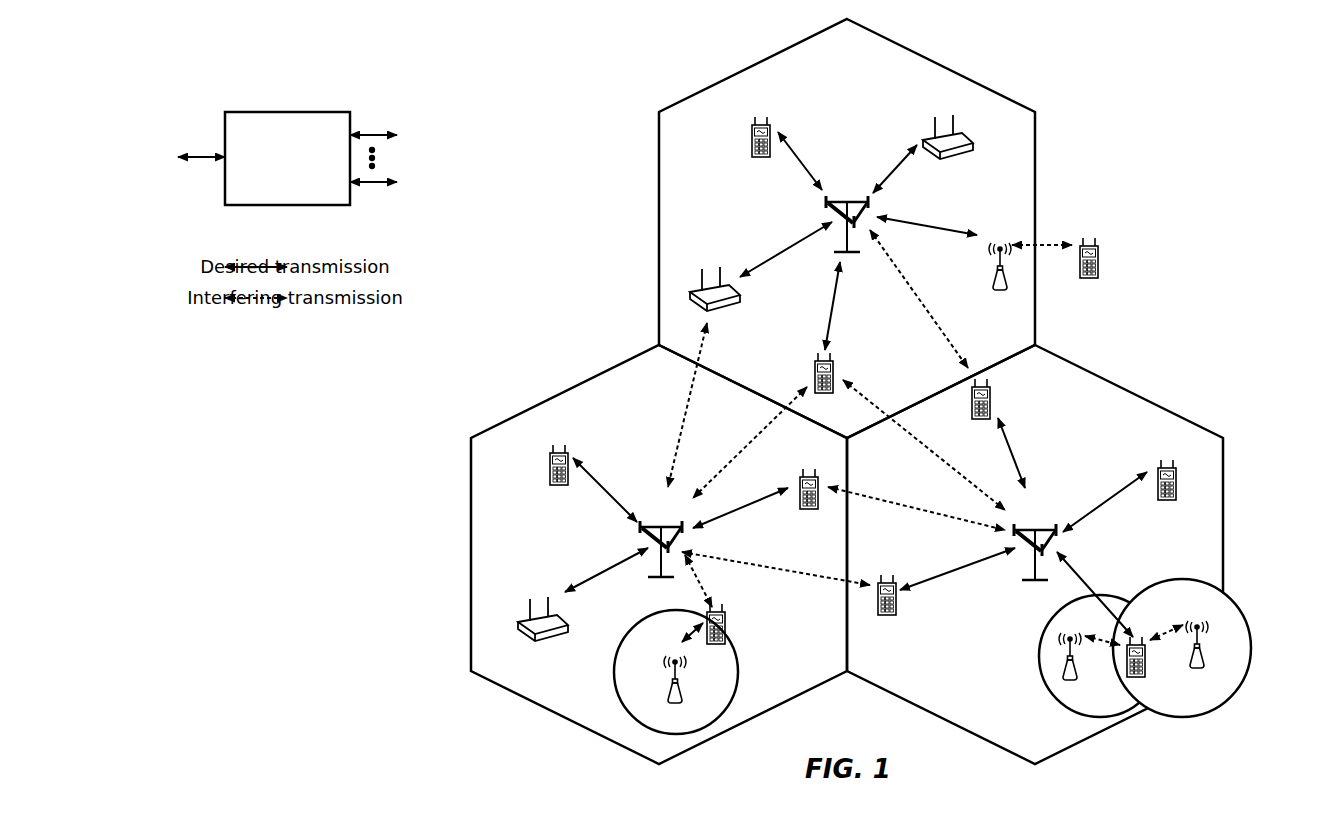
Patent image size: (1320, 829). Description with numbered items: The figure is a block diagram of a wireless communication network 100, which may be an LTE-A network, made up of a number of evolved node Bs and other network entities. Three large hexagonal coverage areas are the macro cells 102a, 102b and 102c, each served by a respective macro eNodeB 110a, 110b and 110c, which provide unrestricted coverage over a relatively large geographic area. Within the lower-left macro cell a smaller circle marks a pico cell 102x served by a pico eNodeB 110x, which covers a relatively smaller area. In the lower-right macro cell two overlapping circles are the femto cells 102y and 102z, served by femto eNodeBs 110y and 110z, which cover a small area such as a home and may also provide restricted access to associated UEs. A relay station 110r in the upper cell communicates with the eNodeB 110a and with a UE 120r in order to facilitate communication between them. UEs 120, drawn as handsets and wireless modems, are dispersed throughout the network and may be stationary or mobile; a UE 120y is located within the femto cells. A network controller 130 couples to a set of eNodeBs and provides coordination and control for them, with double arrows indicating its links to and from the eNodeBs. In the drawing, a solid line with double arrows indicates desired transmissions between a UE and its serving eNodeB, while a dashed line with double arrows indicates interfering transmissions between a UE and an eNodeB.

The wireless communication network 100 is at (1165, 76).
The macro cell 102a is at (940, 62).
The macro cell 102b is at (567, 390).
The macro cell 102c is at (1130, 392).
The pico cell 102x is at (684, 664).
The femto cell 102y is at (1042, 632).
The femto cell 102z is at (1176, 578).
The macro eNodeB 110a is at (844, 201).
The macro eNodeB 110b is at (655, 526).
The macro eNodeB 110c is at (1031, 529).
The relay station 110r is at (984, 278).
The pico eNodeB 110x is at (683, 695).
The femto eNodeB 110y is at (1077, 668).
The femto eNodeB 110z is at (1204, 656).
The user equipment 120 is at (752, 134).
The UE 120r is at (1098, 278).
The UE 120y is at (1125, 672).
The network controller 130 is at (283, 112).